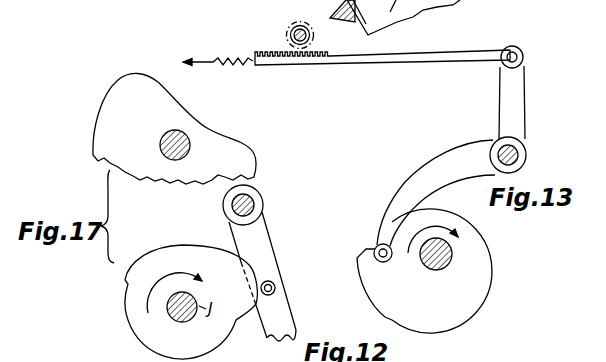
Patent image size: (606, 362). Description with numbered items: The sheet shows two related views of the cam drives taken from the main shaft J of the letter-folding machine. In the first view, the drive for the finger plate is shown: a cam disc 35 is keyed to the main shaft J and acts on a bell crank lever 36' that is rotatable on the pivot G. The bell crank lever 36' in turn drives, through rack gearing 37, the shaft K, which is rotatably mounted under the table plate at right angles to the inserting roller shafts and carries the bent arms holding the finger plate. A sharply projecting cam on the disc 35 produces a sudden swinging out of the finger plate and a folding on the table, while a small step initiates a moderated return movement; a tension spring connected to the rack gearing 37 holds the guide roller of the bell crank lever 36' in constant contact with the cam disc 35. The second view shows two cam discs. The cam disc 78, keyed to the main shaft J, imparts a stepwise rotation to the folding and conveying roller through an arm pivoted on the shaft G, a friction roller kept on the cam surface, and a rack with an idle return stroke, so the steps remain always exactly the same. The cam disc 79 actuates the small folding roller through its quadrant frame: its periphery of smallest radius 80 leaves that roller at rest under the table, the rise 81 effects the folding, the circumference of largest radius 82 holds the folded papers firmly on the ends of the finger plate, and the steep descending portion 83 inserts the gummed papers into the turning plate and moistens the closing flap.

In FIG. 13, the shaft K is at (292, 34).
In FIG. 13, the rack gearing 37 is at (312, 59).
In FIG. 13, the pivot G is at (527, 156).
In FIG. 17, the pivot G is at (252, 204).
In FIG. 13, the bell crank lever 36' is at (434, 198).
In FIG. 13, the cam disc 35 is at (491, 278).
In FIG. 13, the main shaft J is at (452, 259).
In FIG. 17, the main shaft J is at (191, 146).
In FIG. 17, the cam disc 78 is at (98, 124).
In FIG. 17, the cam disc 79 is at (185, 251).
In FIG. 17, the periphery of smallest radius 80 is at (185, 291).
In FIG. 17, the rise 81 is at (233, 318).
In FIG. 17, the circumference of largest radius 82 is at (253, 274).
In FIG. 17, the steep descending portion 83 is at (229, 258).